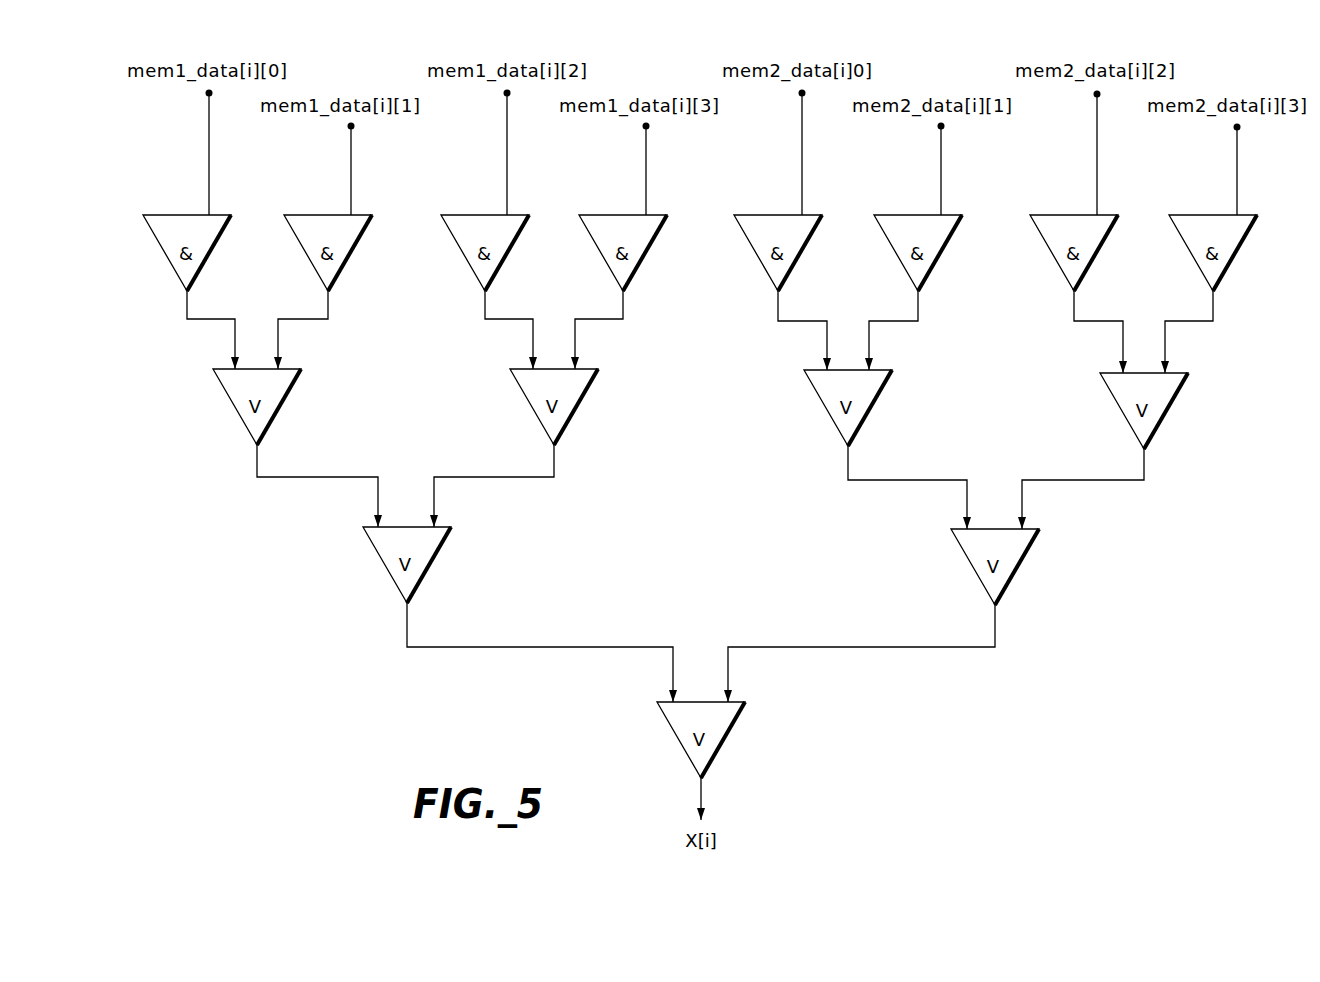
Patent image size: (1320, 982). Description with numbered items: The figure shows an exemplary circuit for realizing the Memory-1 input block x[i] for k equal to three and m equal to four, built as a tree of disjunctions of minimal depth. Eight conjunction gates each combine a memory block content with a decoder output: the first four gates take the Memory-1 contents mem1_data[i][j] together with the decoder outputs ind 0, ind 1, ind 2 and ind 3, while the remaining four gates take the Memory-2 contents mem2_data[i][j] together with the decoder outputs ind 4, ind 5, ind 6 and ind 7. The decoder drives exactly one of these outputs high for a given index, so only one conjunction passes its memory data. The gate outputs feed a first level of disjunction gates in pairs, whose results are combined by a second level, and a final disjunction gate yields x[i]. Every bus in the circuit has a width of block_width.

The AND gate for ind[0] / mem1_data[i][0] 0 is at (163, 215).
The AND gate for ind[1] / mem1_data[i][1] 1 is at (304, 215).
The AND gate for ind[2] / mem1_data[i][2] 2 is at (461, 215).
The AND gate for ind[3] / mem1_data[i][3] 3 is at (600, 215).
The AND gate for ind[4] / mem2_data[i][0] 4 is at (755, 215).
The AND gate for ind[5] / mem2_data[i][1] 5 is at (894, 215).
The AND gate for ind[6] / mem2_data[i][2] 6 is at (1050, 215).
The AND gate for ind[7] / mem2_data[i][3] 7 is at (1190, 215).